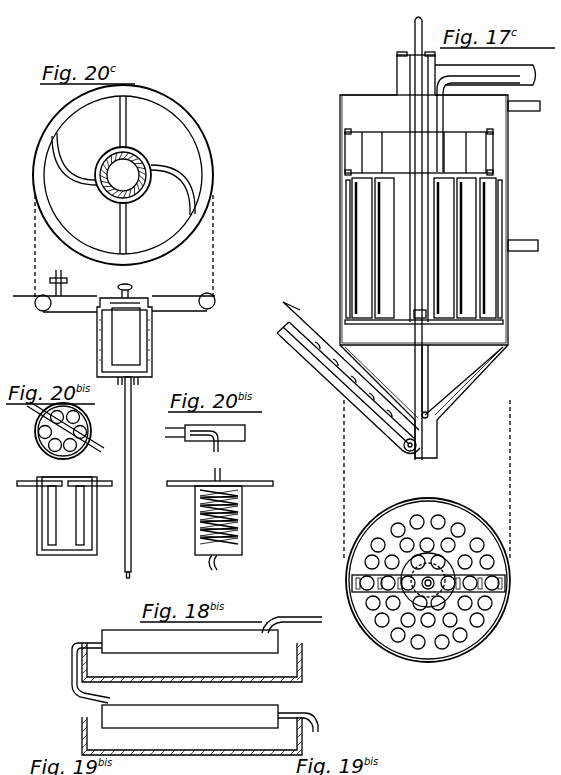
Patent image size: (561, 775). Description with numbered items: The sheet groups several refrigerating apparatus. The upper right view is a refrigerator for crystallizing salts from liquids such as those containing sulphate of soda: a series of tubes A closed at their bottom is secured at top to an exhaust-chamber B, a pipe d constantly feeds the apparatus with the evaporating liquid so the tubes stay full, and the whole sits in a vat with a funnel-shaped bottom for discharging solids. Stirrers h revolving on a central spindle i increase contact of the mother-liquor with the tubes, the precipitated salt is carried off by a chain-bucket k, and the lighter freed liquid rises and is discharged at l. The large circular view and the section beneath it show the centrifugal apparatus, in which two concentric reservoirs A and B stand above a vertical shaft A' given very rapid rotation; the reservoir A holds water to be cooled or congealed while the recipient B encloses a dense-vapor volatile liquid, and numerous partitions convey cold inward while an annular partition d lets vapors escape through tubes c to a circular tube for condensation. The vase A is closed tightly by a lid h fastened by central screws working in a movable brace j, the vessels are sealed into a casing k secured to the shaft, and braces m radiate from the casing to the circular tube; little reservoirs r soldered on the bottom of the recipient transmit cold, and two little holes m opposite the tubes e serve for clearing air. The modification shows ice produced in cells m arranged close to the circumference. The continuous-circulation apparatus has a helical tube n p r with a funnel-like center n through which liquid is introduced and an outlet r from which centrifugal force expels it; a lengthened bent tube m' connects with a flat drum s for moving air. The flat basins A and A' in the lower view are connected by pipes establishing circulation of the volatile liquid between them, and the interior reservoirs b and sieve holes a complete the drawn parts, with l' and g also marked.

In FIG. 20, the tubes / reservoir A is at (126, 267).
In FIG. 17, the tubes / reservoir A is at (420, 223).
In FIG. 18bis, the tubes / reservoir A is at (197, 660).
In FIG. 20, the vertical shaft A' is at (137, 477).
In FIG. 18bis, the vertical shaft A' is at (210, 718).
In FIG. 20, the exhaust-chamber / recipient B is at (100, 178).
In FIG. 17, the exhaust-chamber / recipient B is at (392, 160).
In FIG. 17, the sieve hole a is at (355, 565).
In FIG. 17, the interior reservoirs b is at (423, 294).
In FIG. 20, the recipient c is at (108, 158).
In FIG. 17, the recipient c is at (443, 51).
In FIG. 20, the pipe / annular partition d is at (101, 317).
In FIG. 17, the pipe / annular partition d is at (485, 118).
In FIG. 20, the tubes e is at (188, 178).
In FIG. 20bis, the tubes e is at (70, 428).
In FIG. 20ter, the tubes e is at (220, 484).
In FIG. 20, the valve / outlet g is at (62, 276).
In FIG. 17, the valve / outlet g is at (392, 324).
In FIG. 20, the stirrers / lid h is at (136, 298).
In FIG. 17, the stirrers / lid h is at (346, 200).
In FIG. 20, the central spindle i is at (115, 295).
In FIG. 17, the central spindle i is at (415, 92).
In FIG. 17, the movable brace j is at (410, 380).
In FIG. 20, the chain-bucket / casing k is at (97, 335).
In FIG. 20ter, the discharge l is at (174, 424).
In FIG. 17, the discharge l is at (419, 218).
In FIG. 20, the branch pipe l' is at (121, 245).
In FIG. 17, the branch pipe l' is at (522, 243).
In FIG. 20, the braces / cells / little holes m is at (123, 175).
In FIG. 20bis, the braces / cells / little holes m is at (63, 433).
In FIG. 20ter, the bent tube m' is at (201, 444).
In FIG. 20, the funnel n is at (131, 182).
In FIG. 20ter, the funnel n is at (216, 467).
In FIG. 20ter, the helical tube p is at (196, 509).
In FIG. 20, the outlet / little reservoirs r is at (118, 383).
In FIG. 20ter, the outlet / little reservoirs r is at (212, 569).
In FIG. 20ter, the flat drum s is at (240, 425).